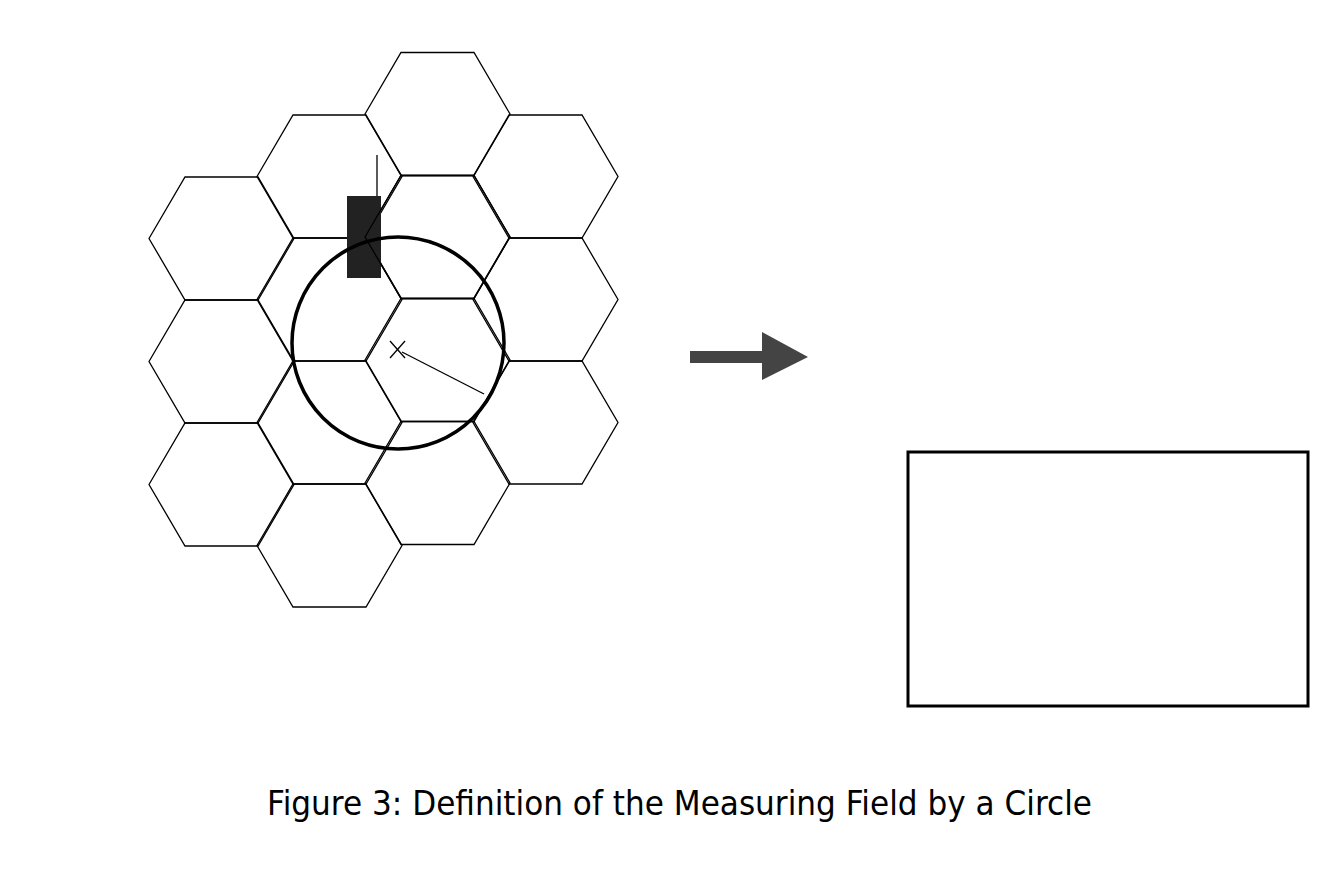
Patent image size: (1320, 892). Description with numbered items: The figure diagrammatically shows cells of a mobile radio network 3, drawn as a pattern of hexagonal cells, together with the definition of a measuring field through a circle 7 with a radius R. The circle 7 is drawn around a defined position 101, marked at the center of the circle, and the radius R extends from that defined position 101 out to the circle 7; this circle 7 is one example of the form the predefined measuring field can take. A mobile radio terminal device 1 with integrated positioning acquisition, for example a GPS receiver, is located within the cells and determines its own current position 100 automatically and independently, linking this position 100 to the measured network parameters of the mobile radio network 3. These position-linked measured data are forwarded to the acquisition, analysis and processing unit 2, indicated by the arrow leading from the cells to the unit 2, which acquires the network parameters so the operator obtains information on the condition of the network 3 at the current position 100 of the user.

The mobile radio terminal device 1 is at (200, 128).
The acquisition, analysis and processing unit 2 is at (865, 252).
The mobile radio network 3 is at (135, 627).
The circle 7 is at (532, 718).
The position 100 is at (373, 285).
The defined position 101 is at (403, 349).
The radius R is at (443, 373).